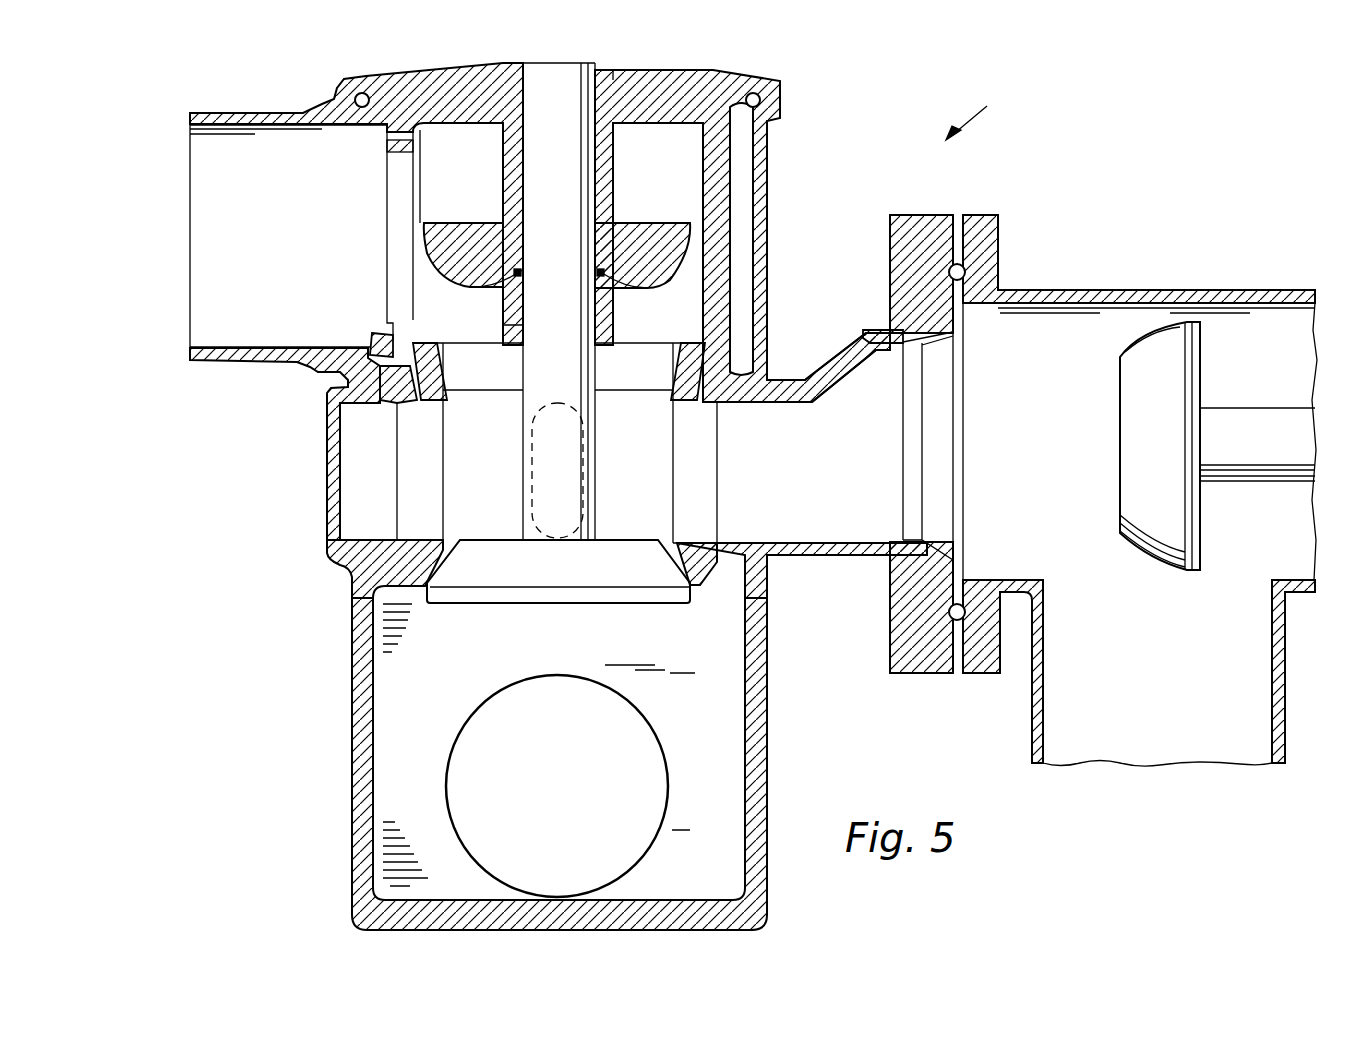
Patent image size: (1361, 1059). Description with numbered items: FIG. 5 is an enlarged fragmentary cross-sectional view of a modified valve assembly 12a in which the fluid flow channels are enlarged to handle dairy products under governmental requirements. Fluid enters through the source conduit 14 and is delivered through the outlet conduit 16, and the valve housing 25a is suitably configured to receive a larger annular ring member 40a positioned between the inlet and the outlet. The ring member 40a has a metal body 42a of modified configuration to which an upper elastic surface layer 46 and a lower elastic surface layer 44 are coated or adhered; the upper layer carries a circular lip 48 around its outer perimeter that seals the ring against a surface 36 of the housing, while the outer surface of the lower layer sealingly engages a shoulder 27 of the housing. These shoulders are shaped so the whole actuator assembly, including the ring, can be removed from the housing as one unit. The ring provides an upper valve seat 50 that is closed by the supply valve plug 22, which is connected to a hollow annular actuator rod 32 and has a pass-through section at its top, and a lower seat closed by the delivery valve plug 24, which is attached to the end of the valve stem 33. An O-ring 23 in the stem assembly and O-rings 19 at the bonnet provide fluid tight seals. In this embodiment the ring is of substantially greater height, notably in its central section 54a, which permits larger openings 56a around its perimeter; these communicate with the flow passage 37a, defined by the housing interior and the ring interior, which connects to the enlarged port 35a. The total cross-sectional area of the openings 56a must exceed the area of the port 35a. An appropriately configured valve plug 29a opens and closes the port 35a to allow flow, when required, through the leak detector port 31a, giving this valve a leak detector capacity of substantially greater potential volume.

The valve assembly 12a is at (995, 117).
The source conduit 14 is at (193, 243).
The outlet conduit 16 is at (668, 780).
The O-ring 19 is at (757, 100).
The supply valve plug 22 is at (672, 232).
The O-ring 23 is at (610, 283).
The delivery valve plug 24 is at (594, 600).
The valve housing 25a is at (360, 651).
The shoulder 27 is at (738, 575).
The valve plug 29a is at (1135, 397).
The leak detector port 31a is at (1240, 672).
The actuator rod 32 is at (607, 70).
The valve stem 33 is at (541, 67).
The port 35a is at (833, 385).
The surface 36 is at (762, 348).
The flow passage 37a is at (347, 500).
The annular ring member 40a is at (450, 462).
The metal body 42a is at (417, 397).
The lower elastic surface layer 44 is at (418, 548).
The upper elastic surface layer 46 is at (450, 385).
The circular lip 48 is at (375, 347).
The upper valve seat 50 is at (513, 347).
The central section 54a is at (505, 503).
The openings 56a is at (568, 463).